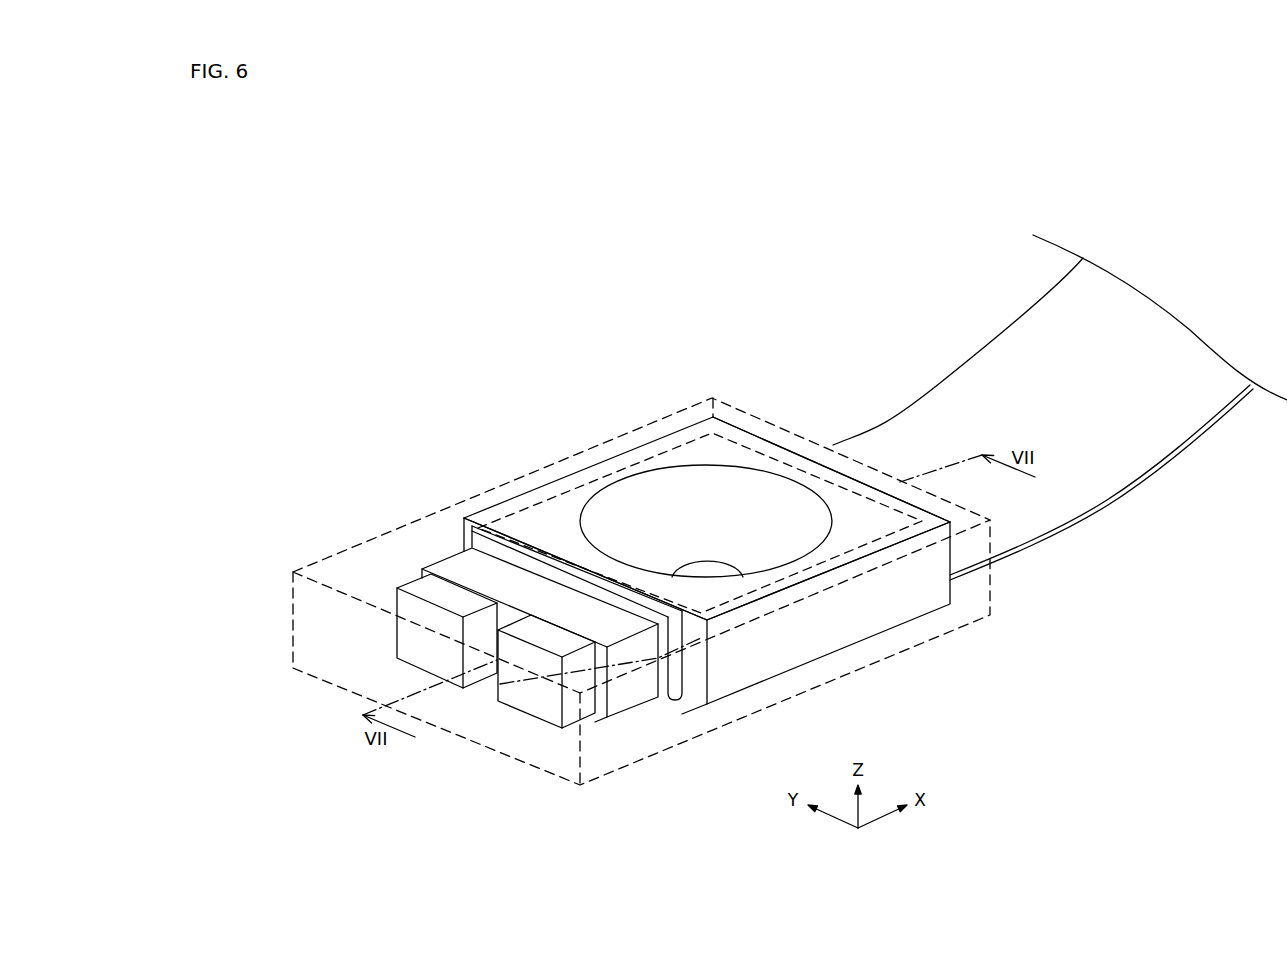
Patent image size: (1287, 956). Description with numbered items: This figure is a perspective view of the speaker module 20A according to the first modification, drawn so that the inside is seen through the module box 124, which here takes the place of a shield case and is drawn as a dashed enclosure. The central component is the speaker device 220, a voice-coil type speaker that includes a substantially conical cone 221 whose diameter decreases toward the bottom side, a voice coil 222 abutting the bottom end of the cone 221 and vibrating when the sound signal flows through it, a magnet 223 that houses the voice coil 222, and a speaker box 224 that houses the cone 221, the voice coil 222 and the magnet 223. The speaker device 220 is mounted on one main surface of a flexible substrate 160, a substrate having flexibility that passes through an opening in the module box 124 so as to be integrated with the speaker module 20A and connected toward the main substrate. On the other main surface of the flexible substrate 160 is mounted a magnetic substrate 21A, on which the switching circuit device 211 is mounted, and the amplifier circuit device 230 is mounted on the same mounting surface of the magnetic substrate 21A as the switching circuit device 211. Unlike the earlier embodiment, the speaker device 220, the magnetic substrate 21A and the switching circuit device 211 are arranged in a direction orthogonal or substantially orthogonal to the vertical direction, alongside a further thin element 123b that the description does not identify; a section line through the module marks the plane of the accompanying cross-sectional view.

The speaker module 20A is at (876, 228).
The flexible substrate 160 is at (1005, 358).
The speaker device 220 is at (548, 380).
The cone 221 is at (728, 478).
The voice coil 222 is at (627, 545).
The magnet 223 is at (713, 552).
The speaker box 224 is at (530, 513).
The module box 124 is at (348, 548).
The switching circuit device 211 is at (433, 648).
The amplifier circuit device 230 is at (533, 692).
The magnetic substrate 21A is at (633, 685).
The flexible substrate 123b is at (685, 680).